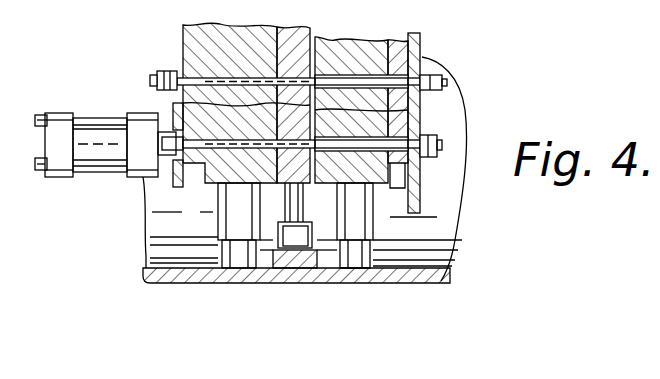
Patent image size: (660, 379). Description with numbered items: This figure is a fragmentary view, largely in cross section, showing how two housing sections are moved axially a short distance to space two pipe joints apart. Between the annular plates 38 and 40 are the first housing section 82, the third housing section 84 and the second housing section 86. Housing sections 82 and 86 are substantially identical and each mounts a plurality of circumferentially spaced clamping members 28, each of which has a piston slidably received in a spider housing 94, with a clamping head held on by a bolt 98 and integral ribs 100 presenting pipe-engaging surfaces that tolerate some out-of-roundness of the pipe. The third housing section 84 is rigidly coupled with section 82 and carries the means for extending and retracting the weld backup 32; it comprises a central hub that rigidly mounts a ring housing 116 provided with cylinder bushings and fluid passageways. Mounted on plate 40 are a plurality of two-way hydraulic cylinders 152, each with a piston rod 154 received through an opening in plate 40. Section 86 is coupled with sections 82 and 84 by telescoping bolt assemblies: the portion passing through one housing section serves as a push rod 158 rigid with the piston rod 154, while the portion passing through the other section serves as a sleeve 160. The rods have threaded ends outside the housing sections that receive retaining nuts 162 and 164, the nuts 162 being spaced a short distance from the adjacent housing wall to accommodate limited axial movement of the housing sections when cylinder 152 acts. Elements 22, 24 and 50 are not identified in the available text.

The base plate / housing 22 is at (163, 275).
The cylinder assemblies 24 is at (290, 272).
The clamping member 28 is at (213, 248).
The weld backup 32 is at (298, 270).
The annular plate 38 is at (418, 47).
The annular plate 40 is at (173, 178).
The upper member 50 is at (192, 23).
The first housing section 82 is at (218, 19).
The third housing section 84 is at (287, 25).
The second housing section 86 is at (365, 42).
The spider housing 94 is at (207, 181).
The bolt 98 is at (384, 5).
The integral rib 100 is at (362, 270).
The ring housing 116 is at (305, 44).
The hydraulic cylinder 152 is at (100, 127).
The piston rod 154 is at (173, 133).
The push rod 158 is at (223, 77).
The sleeve 160 is at (335, 80).
The retaining nut 162 is at (170, 76).
The retaining nut 164 is at (443, 96).